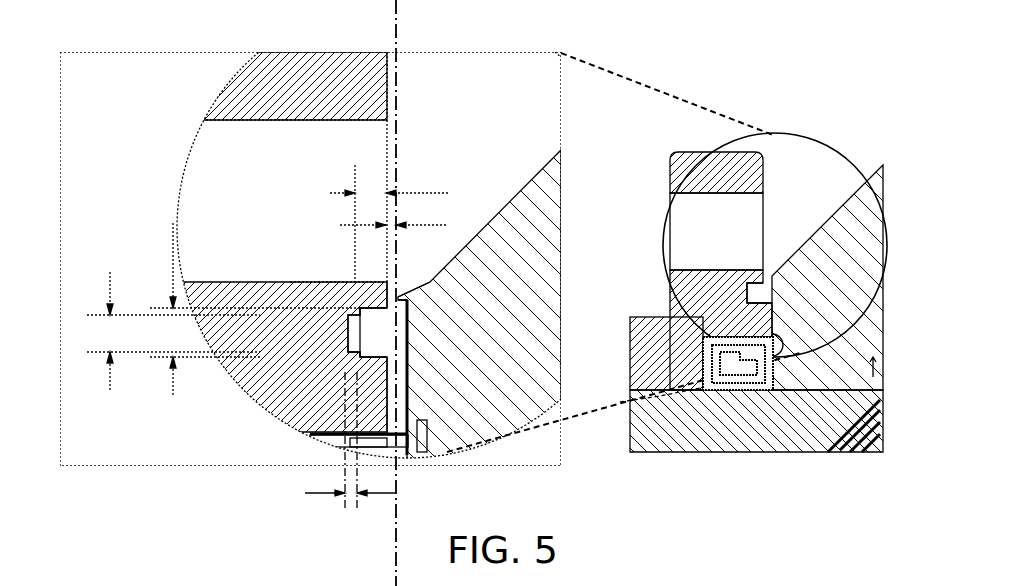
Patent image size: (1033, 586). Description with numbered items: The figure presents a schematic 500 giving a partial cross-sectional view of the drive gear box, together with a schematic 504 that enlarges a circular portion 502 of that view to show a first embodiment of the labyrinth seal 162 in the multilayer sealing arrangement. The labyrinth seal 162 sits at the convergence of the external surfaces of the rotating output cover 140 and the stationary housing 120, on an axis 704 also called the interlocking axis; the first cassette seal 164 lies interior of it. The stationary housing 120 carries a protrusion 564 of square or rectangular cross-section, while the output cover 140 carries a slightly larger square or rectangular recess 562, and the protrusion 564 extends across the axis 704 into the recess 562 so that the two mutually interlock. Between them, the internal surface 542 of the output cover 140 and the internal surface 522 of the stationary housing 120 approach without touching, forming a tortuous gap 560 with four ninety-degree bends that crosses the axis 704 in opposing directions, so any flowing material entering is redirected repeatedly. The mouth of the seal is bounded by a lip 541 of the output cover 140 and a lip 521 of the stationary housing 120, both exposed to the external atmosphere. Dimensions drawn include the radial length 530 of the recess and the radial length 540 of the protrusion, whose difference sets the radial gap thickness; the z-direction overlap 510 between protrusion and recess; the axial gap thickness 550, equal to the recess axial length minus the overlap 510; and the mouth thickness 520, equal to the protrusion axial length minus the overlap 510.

The schematic 500 is at (826, 70).
The enlarged circular portion 502 is at (840, 160).
The schematic 504 is at (136, 38).
The stationary housing 120 is at (547, 193).
The output cover 140 is at (203, 174).
The labyrinth seal 162 is at (755, 285).
The first cassette seal 164 is at (706, 363).
The axis 704 is at (397, 154).
The amount of z-direction overlap 510 is at (407, 223).
The thickness of the mouth of the tortuous gap 520 is at (411, 226).
The lip 521 is at (405, 298).
The internal surface 522 is at (385, 318).
The length of the recess in the r-direction 530 is at (173, 223).
The length of the protrusion in the r-direction 540 is at (173, 320).
The lip 541 is at (385, 284).
The internal surface 542 is at (376, 305).
The gap thickness in the z-direction 550 is at (332, 441).
The tortuous gap 560 is at (367, 317).
The recess 562 is at (323, 332).
The protrusion 564 is at (368, 345).